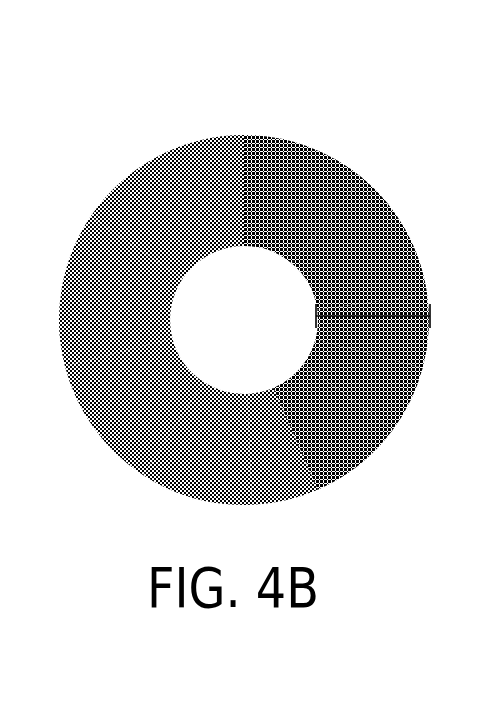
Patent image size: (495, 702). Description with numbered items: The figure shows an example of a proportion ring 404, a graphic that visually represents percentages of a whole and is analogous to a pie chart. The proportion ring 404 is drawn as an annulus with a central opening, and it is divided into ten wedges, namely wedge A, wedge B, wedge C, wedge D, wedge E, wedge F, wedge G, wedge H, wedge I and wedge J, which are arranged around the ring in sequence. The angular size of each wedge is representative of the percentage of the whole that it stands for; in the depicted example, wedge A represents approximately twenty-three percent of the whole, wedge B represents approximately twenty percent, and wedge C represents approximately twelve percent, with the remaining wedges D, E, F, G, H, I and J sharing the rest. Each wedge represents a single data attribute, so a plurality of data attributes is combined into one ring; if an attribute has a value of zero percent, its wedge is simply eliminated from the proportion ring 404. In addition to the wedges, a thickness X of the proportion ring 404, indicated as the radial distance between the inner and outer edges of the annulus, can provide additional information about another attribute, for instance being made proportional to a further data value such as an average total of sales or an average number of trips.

The proportion ring 404 is at (244, 287).
The thickness of the proportion ring X is at (392, 315).
The wedge A is at (167, 207).
The wedge B is at (121, 292).
The wedge C is at (134, 407).
The wedge D is at (197, 443).
The wedge E is at (282, 446).
The wedge F is at (333, 427).
The wedge G is at (363, 384).
The wedge H is at (372, 331).
The wedge I is at (360, 243).
The wedge J is at (303, 199).